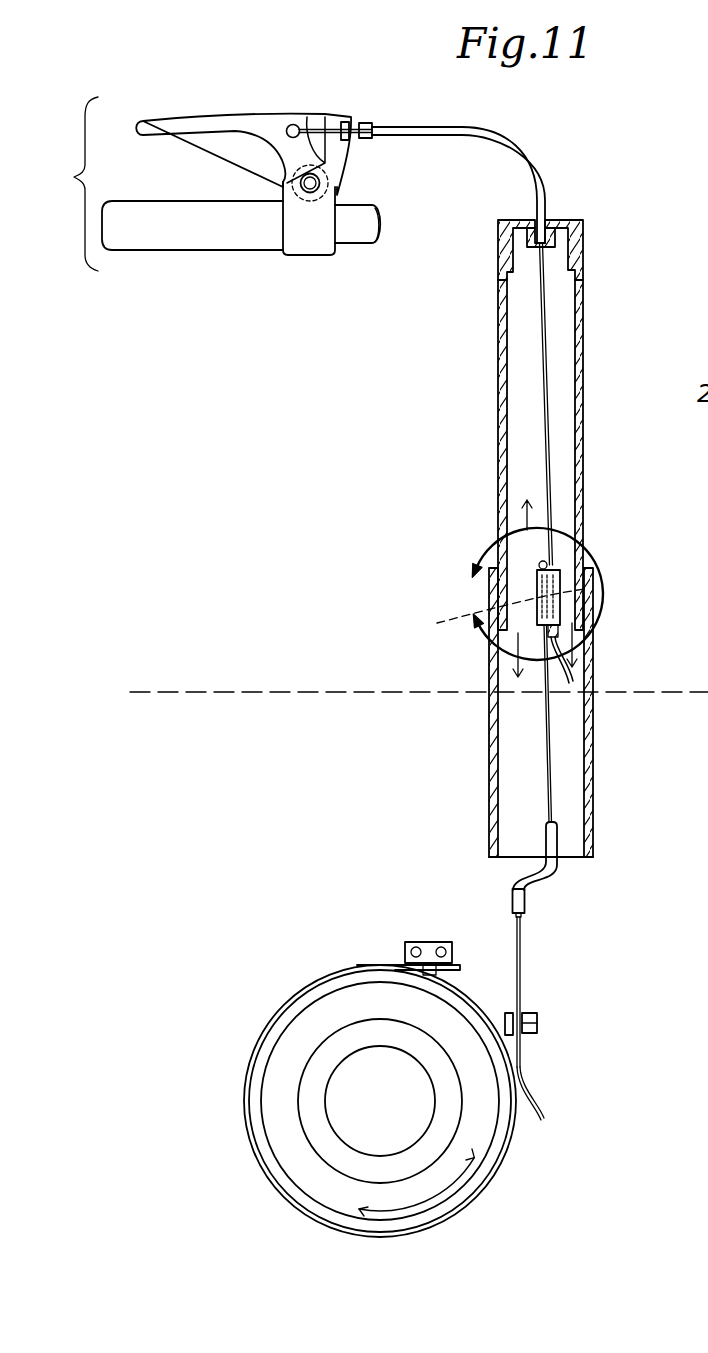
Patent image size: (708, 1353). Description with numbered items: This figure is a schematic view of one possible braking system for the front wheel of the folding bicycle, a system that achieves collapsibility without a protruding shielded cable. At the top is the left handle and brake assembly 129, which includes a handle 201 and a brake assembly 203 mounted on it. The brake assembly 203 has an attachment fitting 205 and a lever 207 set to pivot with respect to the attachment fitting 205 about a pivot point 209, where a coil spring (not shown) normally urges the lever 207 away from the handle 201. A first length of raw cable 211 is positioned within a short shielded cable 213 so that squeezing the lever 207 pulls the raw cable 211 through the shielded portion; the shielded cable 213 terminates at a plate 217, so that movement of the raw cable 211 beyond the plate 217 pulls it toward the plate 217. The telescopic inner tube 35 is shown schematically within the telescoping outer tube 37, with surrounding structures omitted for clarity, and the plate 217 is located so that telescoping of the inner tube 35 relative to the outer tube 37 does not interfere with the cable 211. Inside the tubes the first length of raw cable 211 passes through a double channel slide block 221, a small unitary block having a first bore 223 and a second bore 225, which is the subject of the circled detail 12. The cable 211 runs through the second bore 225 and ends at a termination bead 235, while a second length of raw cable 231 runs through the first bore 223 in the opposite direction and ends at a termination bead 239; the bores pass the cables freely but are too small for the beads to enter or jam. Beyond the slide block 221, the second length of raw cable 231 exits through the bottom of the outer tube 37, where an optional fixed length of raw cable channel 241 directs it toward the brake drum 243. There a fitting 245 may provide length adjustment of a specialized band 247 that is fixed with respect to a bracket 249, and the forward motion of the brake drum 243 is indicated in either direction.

The left handle and brake assembly 129 is at (73, 177).
The handle 201 is at (188, 250).
The brake assembly 203 is at (299, 257).
The attachment fitting 205 is at (325, 230).
The lever 207 is at (177, 115).
The pivot point 209 is at (320, 185).
The first length of raw cable 211 is at (307, 117).
The shielded cable 213 is at (525, 150).
The plate 217 is at (565, 220).
The telescopic inner tube 35 is at (585, 372).
The telescoping outer tube 37 is at (593, 820).
The detail view circle (FIG. 12) 12 is at (520, 594).
The double channel slide block 221 is at (560, 568).
The first bore 223 is at (487, 614).
The second bore 225 is at (585, 589).
The second length of raw cable 231 is at (552, 768).
The termination bead 235 is at (556, 632).
The termination bead 239 is at (543, 561).
The fixed length of raw cable channel 241 is at (537, 877).
The brake drum 243 is at (495, 1160).
The fitting 245 is at (532, 1035).
The band 247 is at (475, 1202).
The bracket 249 is at (423, 942).